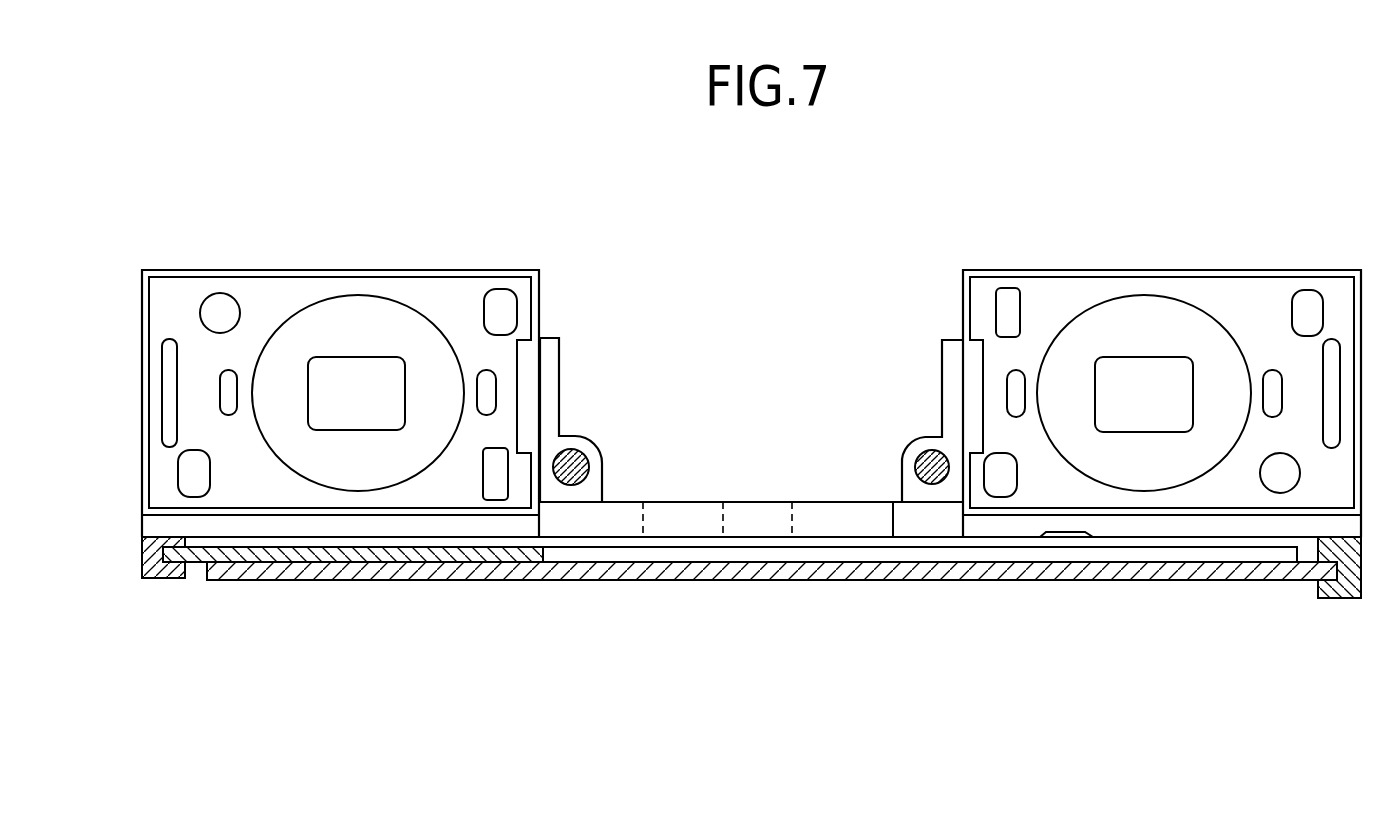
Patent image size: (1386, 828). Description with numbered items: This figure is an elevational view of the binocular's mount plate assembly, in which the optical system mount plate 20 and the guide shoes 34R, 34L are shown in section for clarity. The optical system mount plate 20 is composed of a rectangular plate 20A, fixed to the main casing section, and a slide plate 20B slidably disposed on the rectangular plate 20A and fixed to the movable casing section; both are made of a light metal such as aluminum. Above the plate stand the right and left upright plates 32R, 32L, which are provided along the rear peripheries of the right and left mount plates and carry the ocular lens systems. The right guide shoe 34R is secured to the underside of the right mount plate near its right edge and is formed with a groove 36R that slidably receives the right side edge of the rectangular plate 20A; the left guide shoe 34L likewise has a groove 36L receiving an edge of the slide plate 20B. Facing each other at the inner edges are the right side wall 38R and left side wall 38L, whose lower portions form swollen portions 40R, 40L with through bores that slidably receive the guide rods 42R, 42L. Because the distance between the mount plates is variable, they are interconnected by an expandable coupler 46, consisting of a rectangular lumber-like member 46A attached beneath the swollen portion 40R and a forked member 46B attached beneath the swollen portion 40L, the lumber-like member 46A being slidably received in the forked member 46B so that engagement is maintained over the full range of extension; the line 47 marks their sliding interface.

The optical system mount plate 20 is at (440, 588).
The rectangular plate 20A is at (345, 581).
The slide plate 20B is at (1066, 554).
The left upright plate 32L is at (375, 268).
The right upright plate 32R is at (1160, 268).
The left guide shoe 34L is at (150, 580).
The right guide shoe 34R is at (1331, 599).
The left groove 36L is at (198, 564).
The right groove 36R is at (1316, 574).
The left side wall 38L is at (546, 298).
The right side wall 38R is at (936, 362).
The left swollen portion 40L is at (604, 486).
The right swollen portion 40R is at (900, 487).
The left guide rod 42L is at (581, 451).
The right guide rod 42R is at (920, 458).
The expandable coupler 46 is at (716, 494).
The lumber-like member 46A is at (930, 520).
The forked member 46B is at (596, 520).
The hinge line of connecting member 47 is at (725, 517).